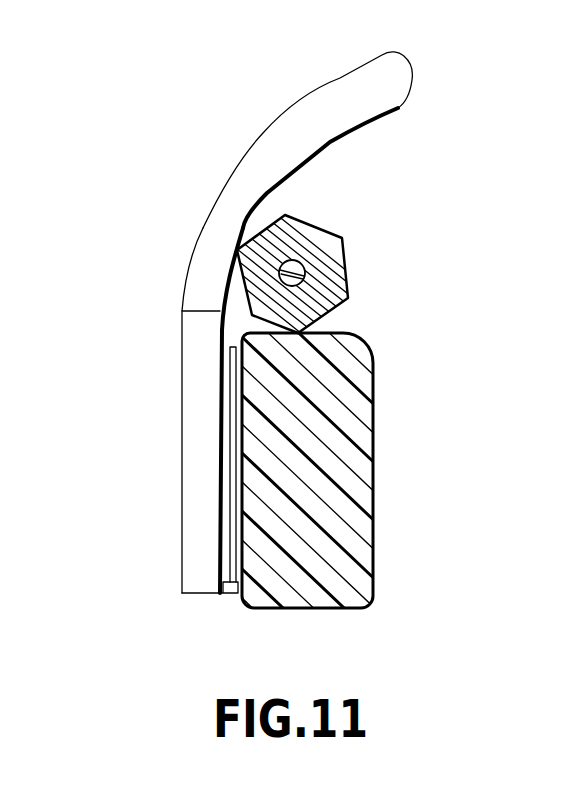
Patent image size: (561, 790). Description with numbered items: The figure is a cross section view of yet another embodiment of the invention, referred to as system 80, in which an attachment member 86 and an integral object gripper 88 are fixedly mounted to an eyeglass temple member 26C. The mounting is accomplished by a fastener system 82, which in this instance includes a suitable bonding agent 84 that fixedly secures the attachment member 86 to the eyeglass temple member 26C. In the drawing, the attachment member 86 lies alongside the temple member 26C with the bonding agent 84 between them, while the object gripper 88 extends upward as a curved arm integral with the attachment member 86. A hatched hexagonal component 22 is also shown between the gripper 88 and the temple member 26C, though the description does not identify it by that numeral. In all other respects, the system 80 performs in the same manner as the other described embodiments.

The system 80 is at (244, 366).
The object gripper 88 is at (320, 120).
The attachment member 86 is at (205, 360).
The bonding agent 84 is at (237, 468).
The fastener system 82 is at (210, 623).
The hexagonal nut 22 is at (337, 258).
The eyeglass temple member 26C is at (373, 495).